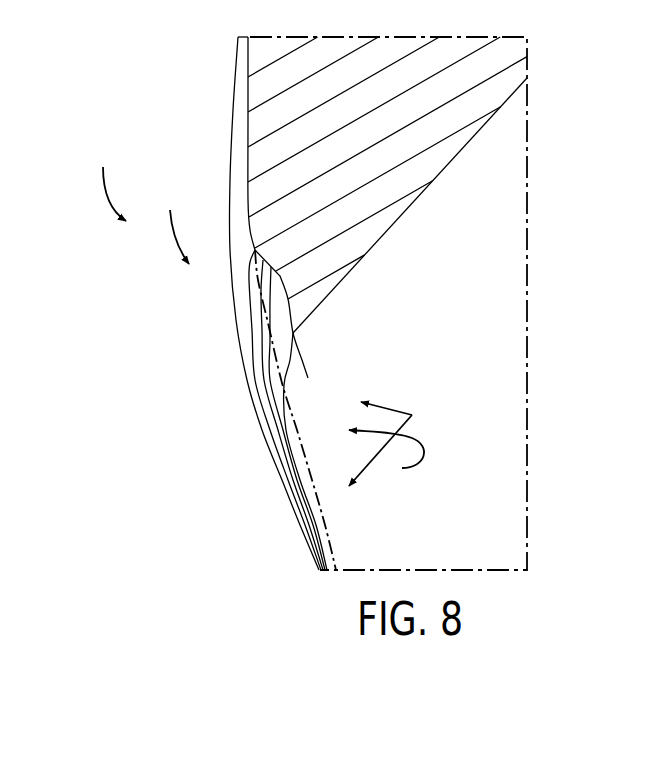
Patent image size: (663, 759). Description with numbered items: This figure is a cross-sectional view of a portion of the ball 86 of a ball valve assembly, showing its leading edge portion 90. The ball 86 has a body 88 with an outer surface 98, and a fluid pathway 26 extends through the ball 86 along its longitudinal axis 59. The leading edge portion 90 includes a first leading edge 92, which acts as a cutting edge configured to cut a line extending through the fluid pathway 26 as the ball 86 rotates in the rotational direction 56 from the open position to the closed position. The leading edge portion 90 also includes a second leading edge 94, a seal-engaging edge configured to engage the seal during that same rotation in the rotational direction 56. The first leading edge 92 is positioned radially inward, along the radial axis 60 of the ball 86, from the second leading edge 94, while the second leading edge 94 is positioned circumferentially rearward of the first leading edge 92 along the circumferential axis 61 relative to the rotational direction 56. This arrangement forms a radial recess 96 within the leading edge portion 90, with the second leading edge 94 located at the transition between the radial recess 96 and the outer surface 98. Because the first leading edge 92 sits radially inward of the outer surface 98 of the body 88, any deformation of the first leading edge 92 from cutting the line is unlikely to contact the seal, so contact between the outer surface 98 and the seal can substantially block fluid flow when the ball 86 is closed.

The fluid pathway 26 is at (473, 313).
The rotational direction 56 is at (168, 233).
The longitudinal axis 59 is at (373, 465).
The radial axis 60 is at (393, 405).
The circumferential axis 61 is at (412, 444).
The ball 86 is at (109, 180).
The body 88 is at (275, 143).
The leading edge portion 90 is at (313, 343).
The first leading edge 92 is at (290, 332).
The second leading edge 94 is at (251, 272).
The radial recess 96 is at (264, 319).
The outer surface 98 is at (237, 62).